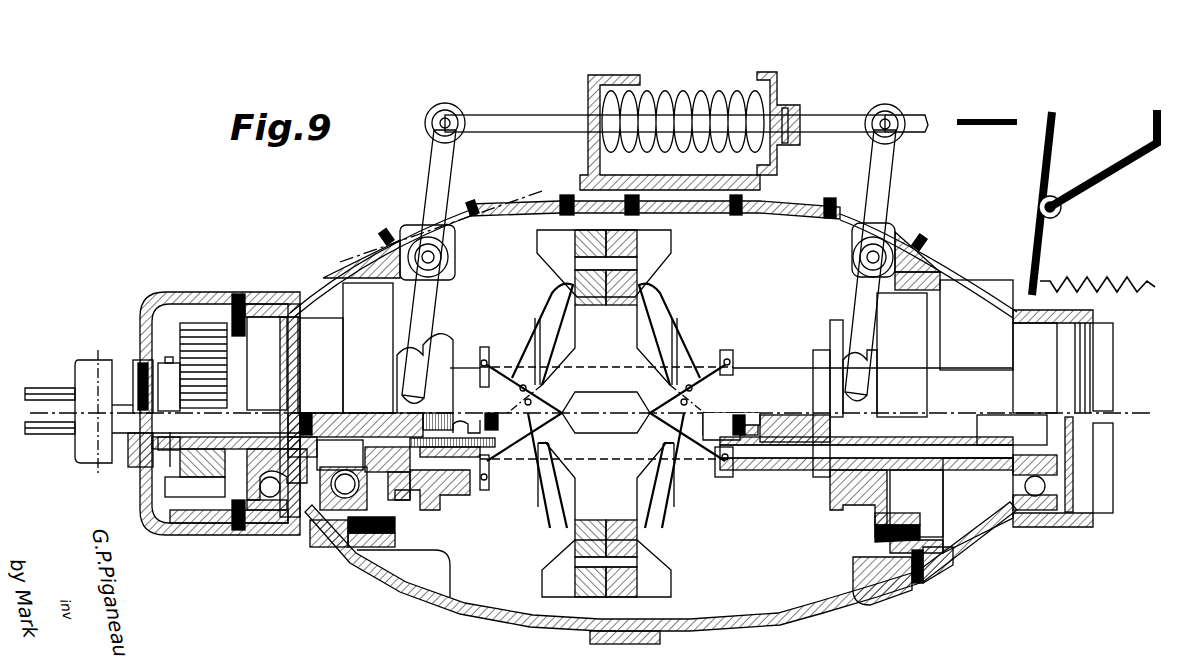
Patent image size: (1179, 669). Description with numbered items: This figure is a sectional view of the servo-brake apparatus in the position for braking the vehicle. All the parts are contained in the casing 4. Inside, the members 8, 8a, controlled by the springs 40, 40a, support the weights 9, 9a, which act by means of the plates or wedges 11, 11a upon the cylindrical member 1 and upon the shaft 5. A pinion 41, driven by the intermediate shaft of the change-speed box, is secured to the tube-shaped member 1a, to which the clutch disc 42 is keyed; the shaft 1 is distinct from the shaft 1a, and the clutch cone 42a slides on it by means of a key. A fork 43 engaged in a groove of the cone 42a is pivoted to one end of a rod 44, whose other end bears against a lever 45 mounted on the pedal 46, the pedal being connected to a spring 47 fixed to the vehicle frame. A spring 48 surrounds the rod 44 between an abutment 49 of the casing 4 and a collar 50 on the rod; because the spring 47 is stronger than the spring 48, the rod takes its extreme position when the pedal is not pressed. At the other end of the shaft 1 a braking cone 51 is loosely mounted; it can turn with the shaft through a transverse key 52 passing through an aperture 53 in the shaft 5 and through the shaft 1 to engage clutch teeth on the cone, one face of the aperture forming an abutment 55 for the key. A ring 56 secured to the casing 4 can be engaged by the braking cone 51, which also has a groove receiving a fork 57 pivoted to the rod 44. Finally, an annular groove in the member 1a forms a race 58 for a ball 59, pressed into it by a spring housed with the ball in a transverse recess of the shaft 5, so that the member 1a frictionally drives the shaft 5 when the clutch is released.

The cylindrical member 1 is at (408, 452).
The tube-shaped member 1a is at (235, 432).
The casing 4 is at (513, 204).
The shaft 5 is at (360, 425).
The member 8 is at (680, 482).
The member 8a is at (685, 362).
The weight 9 is at (552, 256).
The weight 9a is at (657, 584).
The plate or wedge 11 is at (497, 443).
The plate or wedge 11a is at (722, 462).
The spring 40 is at (742, 413).
The spring 40a is at (455, 422).
The pinion 41 is at (188, 337).
The clutch disc 42 is at (354, 550).
The clutch cone 42a is at (396, 520).
The fork 43 is at (433, 198).
The rod 44 is at (493, 122).
The lever 45 is at (1045, 163).
The pedal 46 is at (1155, 132).
The spring 47 is at (1088, 279).
The spring 48 is at (707, 97).
The abutment 49 is at (588, 82).
The collar 50 is at (777, 93).
The braking cone 51 is at (877, 508).
The transverse key 52 is at (815, 475).
The aperture 53 is at (790, 447).
The abutment 55 is at (903, 443).
The ring 56 is at (937, 540).
The fork 57 is at (867, 289).
The race 58 is at (215, 442).
The ball 59 is at (320, 413).